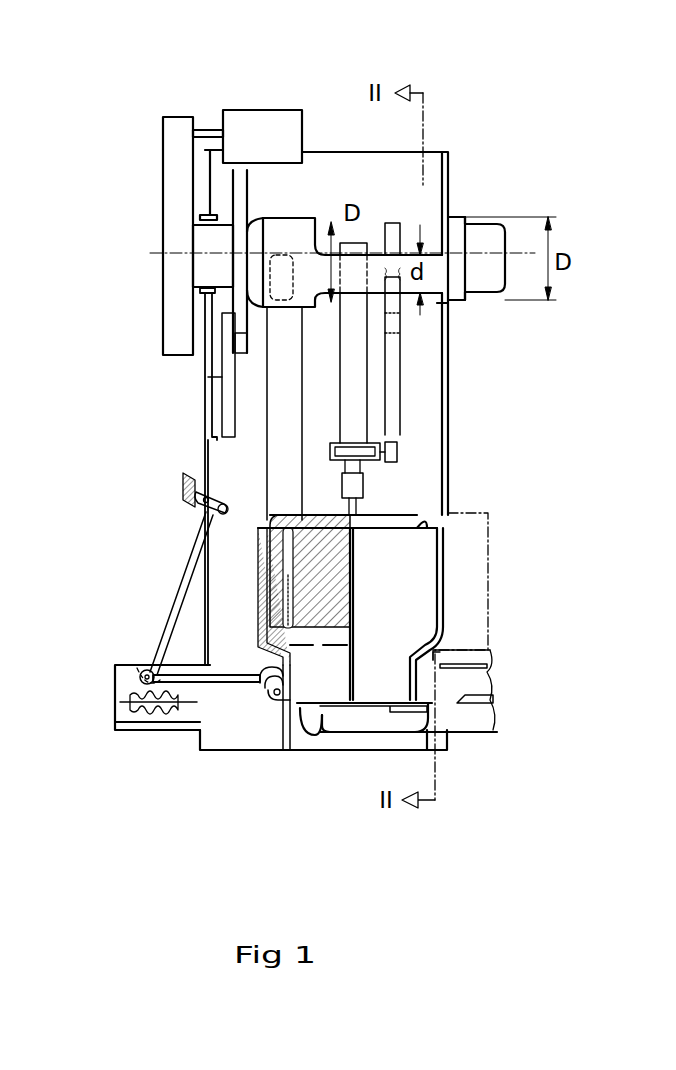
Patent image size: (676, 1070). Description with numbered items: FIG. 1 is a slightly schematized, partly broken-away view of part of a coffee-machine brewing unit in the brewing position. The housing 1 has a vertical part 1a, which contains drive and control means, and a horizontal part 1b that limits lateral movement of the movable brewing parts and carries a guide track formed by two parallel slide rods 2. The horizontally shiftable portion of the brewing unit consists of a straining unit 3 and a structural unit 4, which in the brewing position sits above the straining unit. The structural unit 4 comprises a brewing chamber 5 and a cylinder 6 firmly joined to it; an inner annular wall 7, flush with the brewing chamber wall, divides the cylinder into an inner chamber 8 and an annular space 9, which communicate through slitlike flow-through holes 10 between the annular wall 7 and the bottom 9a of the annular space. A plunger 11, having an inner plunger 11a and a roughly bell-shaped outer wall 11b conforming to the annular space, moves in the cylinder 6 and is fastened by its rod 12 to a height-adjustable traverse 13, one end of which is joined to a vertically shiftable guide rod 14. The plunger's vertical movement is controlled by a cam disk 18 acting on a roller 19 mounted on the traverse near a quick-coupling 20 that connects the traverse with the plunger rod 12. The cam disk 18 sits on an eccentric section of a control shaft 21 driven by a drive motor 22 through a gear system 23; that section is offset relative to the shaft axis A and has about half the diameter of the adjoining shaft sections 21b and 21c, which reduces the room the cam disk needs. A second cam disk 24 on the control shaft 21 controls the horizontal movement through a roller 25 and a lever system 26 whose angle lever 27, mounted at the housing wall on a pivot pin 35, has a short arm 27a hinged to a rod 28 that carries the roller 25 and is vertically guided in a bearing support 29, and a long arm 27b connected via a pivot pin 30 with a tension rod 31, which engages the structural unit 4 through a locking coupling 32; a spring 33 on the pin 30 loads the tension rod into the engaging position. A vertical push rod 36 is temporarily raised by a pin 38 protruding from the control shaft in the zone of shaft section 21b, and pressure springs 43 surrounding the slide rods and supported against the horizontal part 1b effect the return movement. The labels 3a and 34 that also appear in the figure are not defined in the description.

The housing 1 is at (445, 452).
The vertical part 1a is at (450, 163).
The horizontal part 1b is at (490, 666).
The slide rods 2 is at (492, 690).
The straining unit 3 is at (311, 720).
The valve nozzle 3a is at (303, 718).
The structural unit 4 is at (444, 603).
The brewing chamber 5 is at (322, 683).
The cylinder 6 is at (260, 643).
The inner annular wall 7 is at (262, 629).
The inner chamber 8 is at (330, 636).
The annular space 9 is at (262, 613).
The bottom of the annular space 9a is at (264, 690).
The flow-through holes 10 is at (327, 647).
The plunger 11 is at (316, 520).
The inner plunger 11a is at (318, 559).
The outer wall 11b is at (262, 546).
The plunger rod 12 is at (353, 510).
The traverse 13 is at (368, 442).
The guide rod 14 is at (397, 344).
The cam disk 18 is at (352, 346).
The roller 19 is at (393, 454).
The quick-coupling 20 is at (352, 484).
The control shaft 21 is at (316, 220).
The shaft section 21b is at (289, 230).
The shaft section 21c is at (455, 228).
The drive motor 22 is at (257, 130).
The gear system 23 is at (176, 232).
The cam disk 24 is at (240, 270).
The roller 25 is at (257, 343).
The lever system 26 is at (214, 441).
The angle lever 27 is at (200, 503).
The short arm 27a is at (215, 503).
The long arm 27b is at (187, 563).
The rod 28 is at (230, 367).
The bearing support 29 is at (232, 394).
The pivot pin 30 is at (125, 666).
The tension rod 31 is at (218, 683).
The locking coupling 32 is at (282, 658).
The spring 33 is at (146, 670).
The axis 34 is at (187, 472).
The pivot pin 35 is at (186, 478).
The push rod 36 is at (285, 347).
The pin 38 is at (262, 236).
The pressure springs 43 is at (150, 703).
The shaft axis A is at (475, 255).